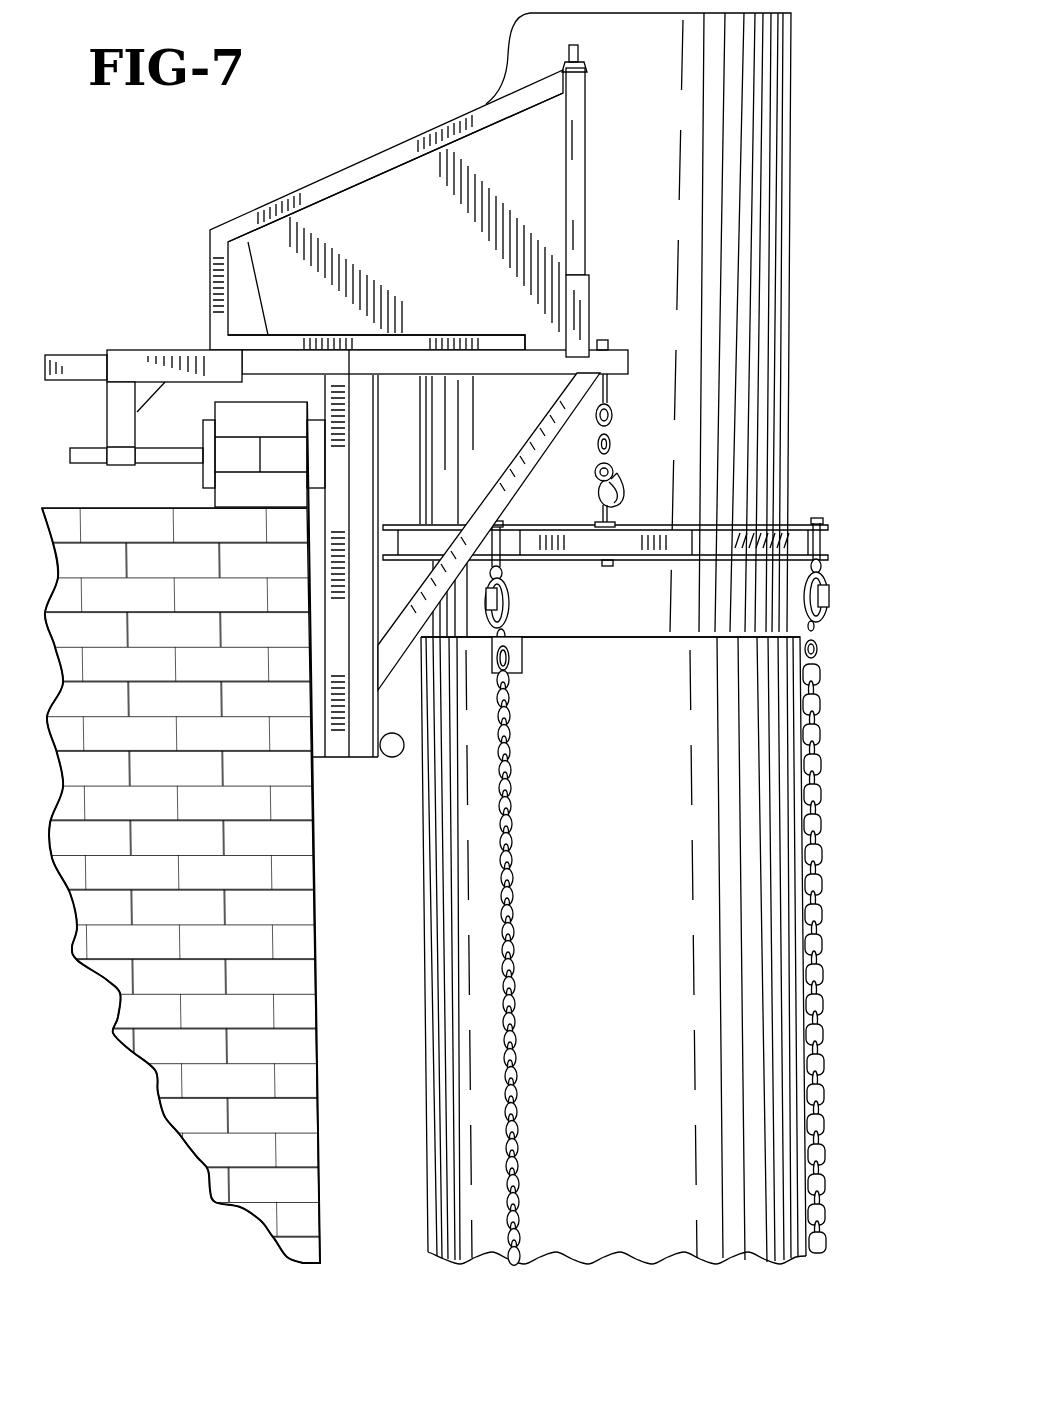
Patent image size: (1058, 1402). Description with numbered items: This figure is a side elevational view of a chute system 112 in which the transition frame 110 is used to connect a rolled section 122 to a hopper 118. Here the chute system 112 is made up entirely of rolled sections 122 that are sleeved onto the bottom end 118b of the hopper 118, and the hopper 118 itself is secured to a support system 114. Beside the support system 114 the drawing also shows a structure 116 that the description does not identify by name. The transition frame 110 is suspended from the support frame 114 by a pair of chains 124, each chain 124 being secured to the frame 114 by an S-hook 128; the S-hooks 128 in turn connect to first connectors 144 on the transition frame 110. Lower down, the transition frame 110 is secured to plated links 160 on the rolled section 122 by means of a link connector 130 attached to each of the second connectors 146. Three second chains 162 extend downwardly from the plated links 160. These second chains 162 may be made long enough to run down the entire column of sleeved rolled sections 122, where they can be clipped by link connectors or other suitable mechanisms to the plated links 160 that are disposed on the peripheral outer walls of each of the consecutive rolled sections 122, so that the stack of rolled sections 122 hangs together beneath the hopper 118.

The transition frame 110 is at (806, 507).
The chute system 112 is at (806, 432).
The support system 114 is at (625, 343).
The wall 116 is at (170, 1120).
The hopper 118 is at (796, 333).
The bottom end 118b is at (645, 617).
The rolled section 122 is at (434, 906).
The chains 124 is at (620, 432).
The S-hook 128 is at (625, 498).
The link connector 130 is at (832, 582).
The first connectors 144 is at (595, 522).
The second connectors 146 is at (830, 537).
The plated links 160 is at (819, 648).
The second chains 162 is at (830, 738).